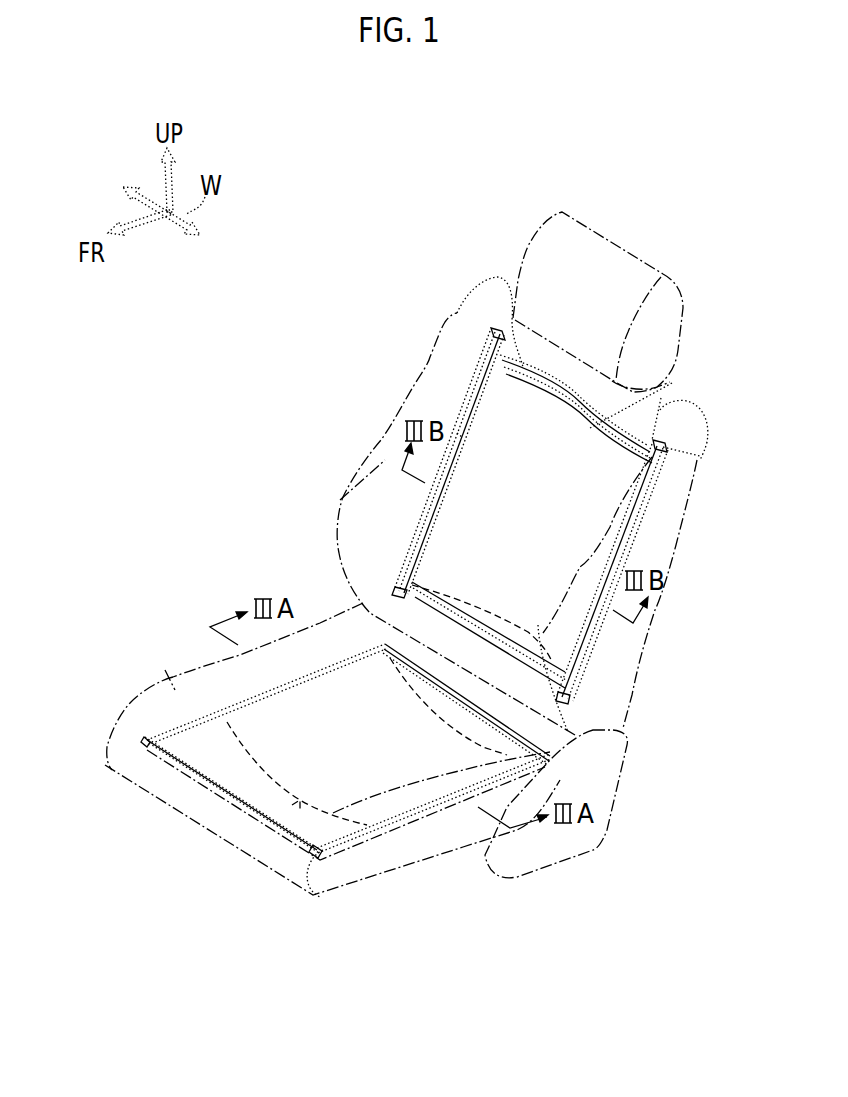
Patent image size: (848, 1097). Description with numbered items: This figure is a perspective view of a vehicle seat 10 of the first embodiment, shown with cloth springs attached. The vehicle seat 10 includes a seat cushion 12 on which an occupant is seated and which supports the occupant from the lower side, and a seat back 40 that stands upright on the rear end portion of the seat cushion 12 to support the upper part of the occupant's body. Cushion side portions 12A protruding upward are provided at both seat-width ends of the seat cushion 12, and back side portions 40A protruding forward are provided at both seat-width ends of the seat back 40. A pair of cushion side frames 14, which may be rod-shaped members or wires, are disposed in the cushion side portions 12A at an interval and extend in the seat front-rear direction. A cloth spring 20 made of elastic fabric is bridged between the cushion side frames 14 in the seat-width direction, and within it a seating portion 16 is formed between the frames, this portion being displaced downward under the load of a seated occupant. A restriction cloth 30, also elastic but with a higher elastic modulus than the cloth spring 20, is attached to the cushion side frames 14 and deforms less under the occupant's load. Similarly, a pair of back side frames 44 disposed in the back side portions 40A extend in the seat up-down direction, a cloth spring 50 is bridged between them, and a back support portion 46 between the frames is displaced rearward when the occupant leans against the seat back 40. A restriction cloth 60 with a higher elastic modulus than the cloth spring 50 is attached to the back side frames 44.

The vehicle seat 10 is at (425, 162).
The seat cushion 12 is at (97, 697).
The cushion side portion 12A is at (170, 682).
The cushion side frame 14 is at (153, 747).
The seating portion 16 is at (441, 800).
The cloth spring 20 is at (228, 792).
The restriction cloth 30 is at (292, 805).
The seat back 40 is at (705, 388).
The back side portion 40A is at (373, 493).
The back side frame 44 is at (490, 335).
The back support portion 46 is at (457, 433).
The cloth spring 50 is at (663, 387).
The restriction cloth 60 is at (527, 362).